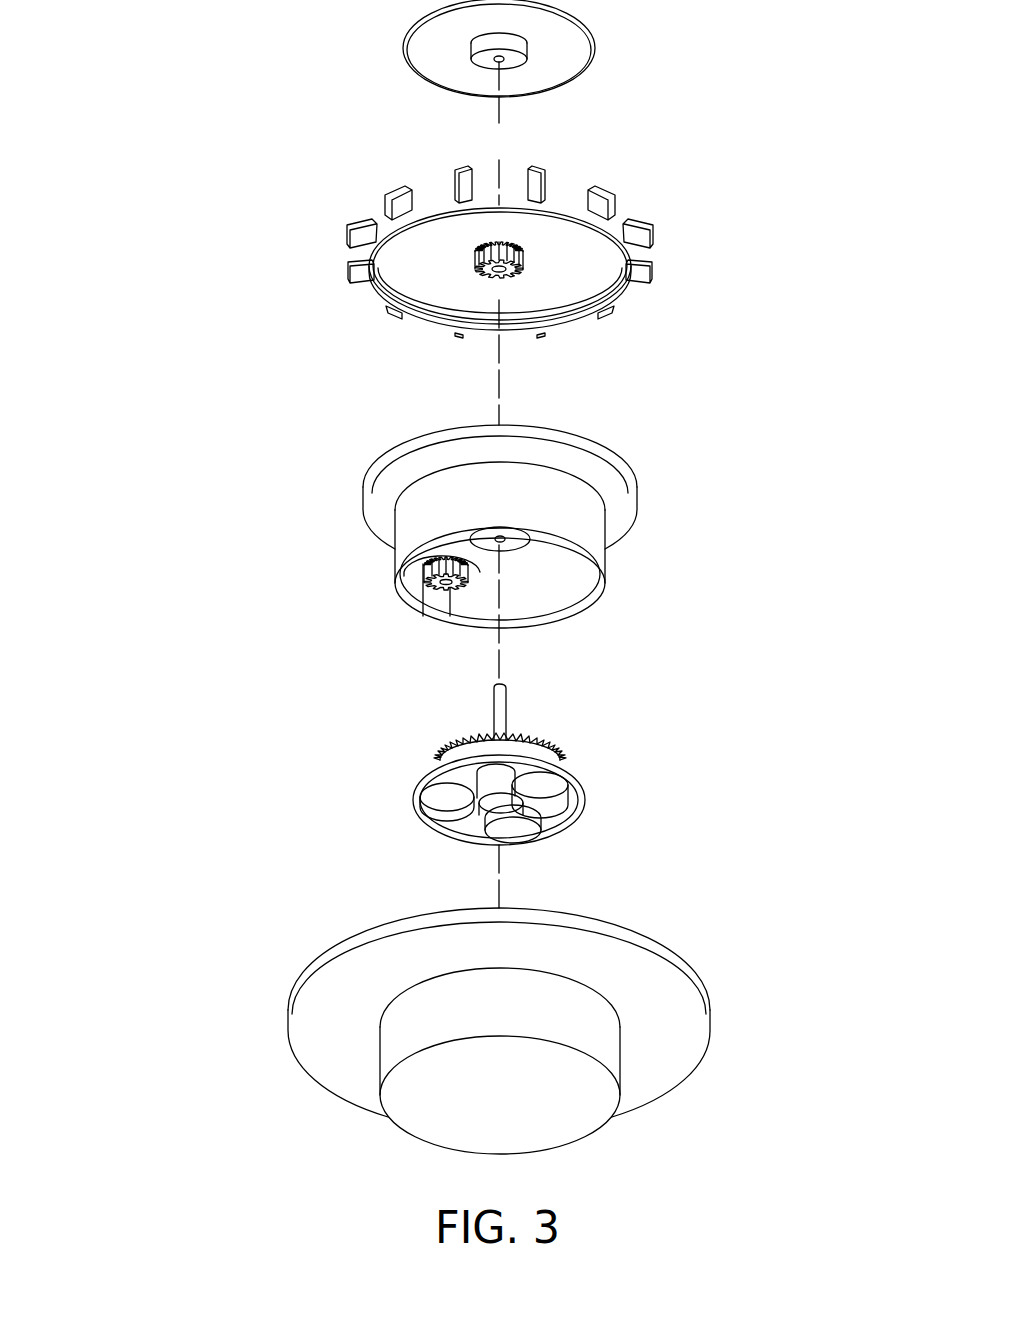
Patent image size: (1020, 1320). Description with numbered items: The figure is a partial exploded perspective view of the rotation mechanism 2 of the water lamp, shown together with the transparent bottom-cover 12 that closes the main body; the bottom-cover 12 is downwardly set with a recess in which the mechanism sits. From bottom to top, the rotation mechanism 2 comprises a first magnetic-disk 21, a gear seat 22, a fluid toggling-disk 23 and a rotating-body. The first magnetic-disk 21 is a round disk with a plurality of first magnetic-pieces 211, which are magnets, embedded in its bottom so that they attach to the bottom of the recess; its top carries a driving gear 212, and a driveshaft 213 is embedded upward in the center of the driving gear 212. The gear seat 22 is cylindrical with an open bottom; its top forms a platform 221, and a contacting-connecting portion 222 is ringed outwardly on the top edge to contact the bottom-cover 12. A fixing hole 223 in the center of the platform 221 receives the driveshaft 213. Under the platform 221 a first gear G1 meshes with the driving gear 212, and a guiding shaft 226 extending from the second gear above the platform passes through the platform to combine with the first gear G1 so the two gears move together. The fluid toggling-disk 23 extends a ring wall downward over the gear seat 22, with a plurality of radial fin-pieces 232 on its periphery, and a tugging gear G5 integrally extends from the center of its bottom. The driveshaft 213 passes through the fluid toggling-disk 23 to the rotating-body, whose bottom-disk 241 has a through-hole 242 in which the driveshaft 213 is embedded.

The rotation mechanism 2 is at (232, 145).
The bottom-cover 12 is at (710, 1005).
The first magnetic-disk 21 is at (505, 755).
The first magnetic-pieces 211 is at (545, 778).
The driving gear 212 is at (470, 744).
The driveshaft 213 is at (502, 700).
The gear seat 22 is at (516, 538).
The platform 221 is at (533, 551).
The contacting-connecting portion 222 is at (633, 497).
The fixing hole 223 is at (503, 536).
The guiding shaft 226 is at (443, 588).
The fluid toggling-disk 23 is at (480, 252).
The radial fin-pieces 232 is at (347, 230).
The bottom-disk 241 is at (590, 45).
The through-hole 242 is at (493, 60).
The first gear G1 is at (424, 570).
The tugging gear G5 is at (522, 259).